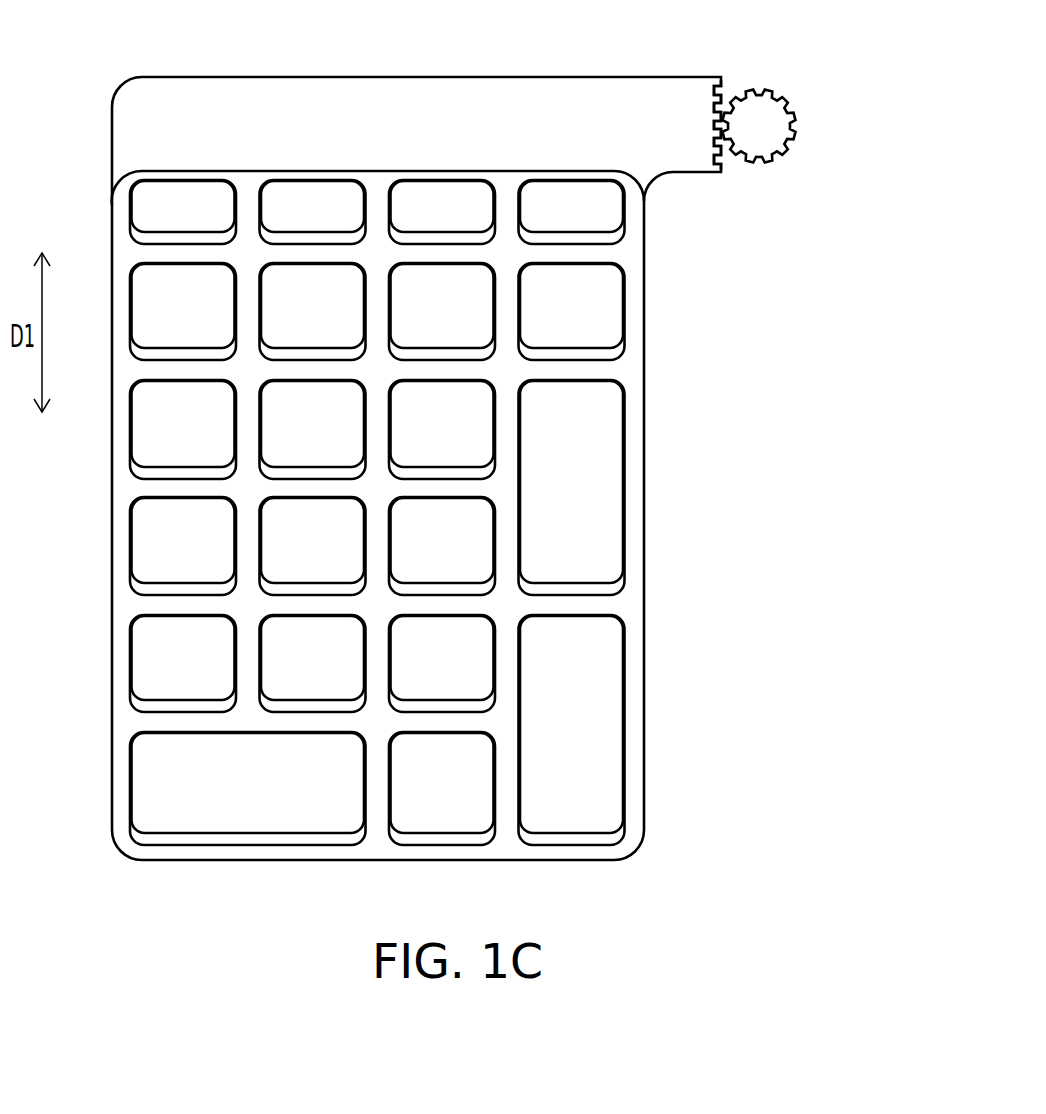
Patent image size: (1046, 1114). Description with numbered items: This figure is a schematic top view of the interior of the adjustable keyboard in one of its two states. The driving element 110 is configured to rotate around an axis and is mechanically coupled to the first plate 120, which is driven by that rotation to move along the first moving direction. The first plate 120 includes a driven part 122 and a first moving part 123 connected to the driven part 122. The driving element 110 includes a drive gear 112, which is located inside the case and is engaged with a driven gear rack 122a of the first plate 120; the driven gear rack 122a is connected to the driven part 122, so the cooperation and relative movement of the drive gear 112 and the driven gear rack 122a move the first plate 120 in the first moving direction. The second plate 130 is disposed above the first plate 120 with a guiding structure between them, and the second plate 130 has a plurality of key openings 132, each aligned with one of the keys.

The driving element 110 is at (818, 106).
The drive gear 112 is at (758, 118).
The first plate 120 is at (455, 434).
The driven part 122 is at (509, 127).
The driven gear rack 122a is at (715, 118).
The first moving part 123 is at (572, 353).
The second plate 130 is at (434, 435).
The key openings 132 is at (443, 383).